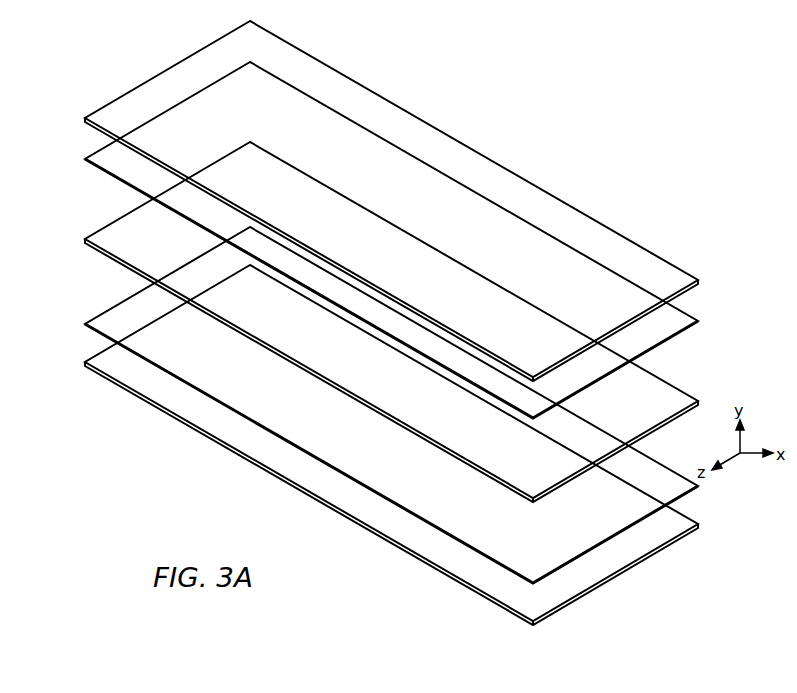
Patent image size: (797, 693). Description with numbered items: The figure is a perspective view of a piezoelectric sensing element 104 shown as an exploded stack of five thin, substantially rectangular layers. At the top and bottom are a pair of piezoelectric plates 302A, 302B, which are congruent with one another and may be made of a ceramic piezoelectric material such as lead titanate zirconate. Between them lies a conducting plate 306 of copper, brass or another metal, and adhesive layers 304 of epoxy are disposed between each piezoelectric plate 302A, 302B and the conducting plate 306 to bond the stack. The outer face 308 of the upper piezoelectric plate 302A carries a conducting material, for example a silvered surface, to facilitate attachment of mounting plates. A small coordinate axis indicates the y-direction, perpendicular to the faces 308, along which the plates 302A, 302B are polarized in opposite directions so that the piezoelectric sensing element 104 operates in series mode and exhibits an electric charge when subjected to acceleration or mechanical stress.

The piezoelectric sensing element 104 is at (600, 151).
The piezoelectric plate 302A is at (115, 113).
The piezoelectric plate 302B is at (110, 361).
The adhesive layer 304 is at (103, 162).
The conducting plate 306 is at (110, 238).
The face 308 is at (630, 273).